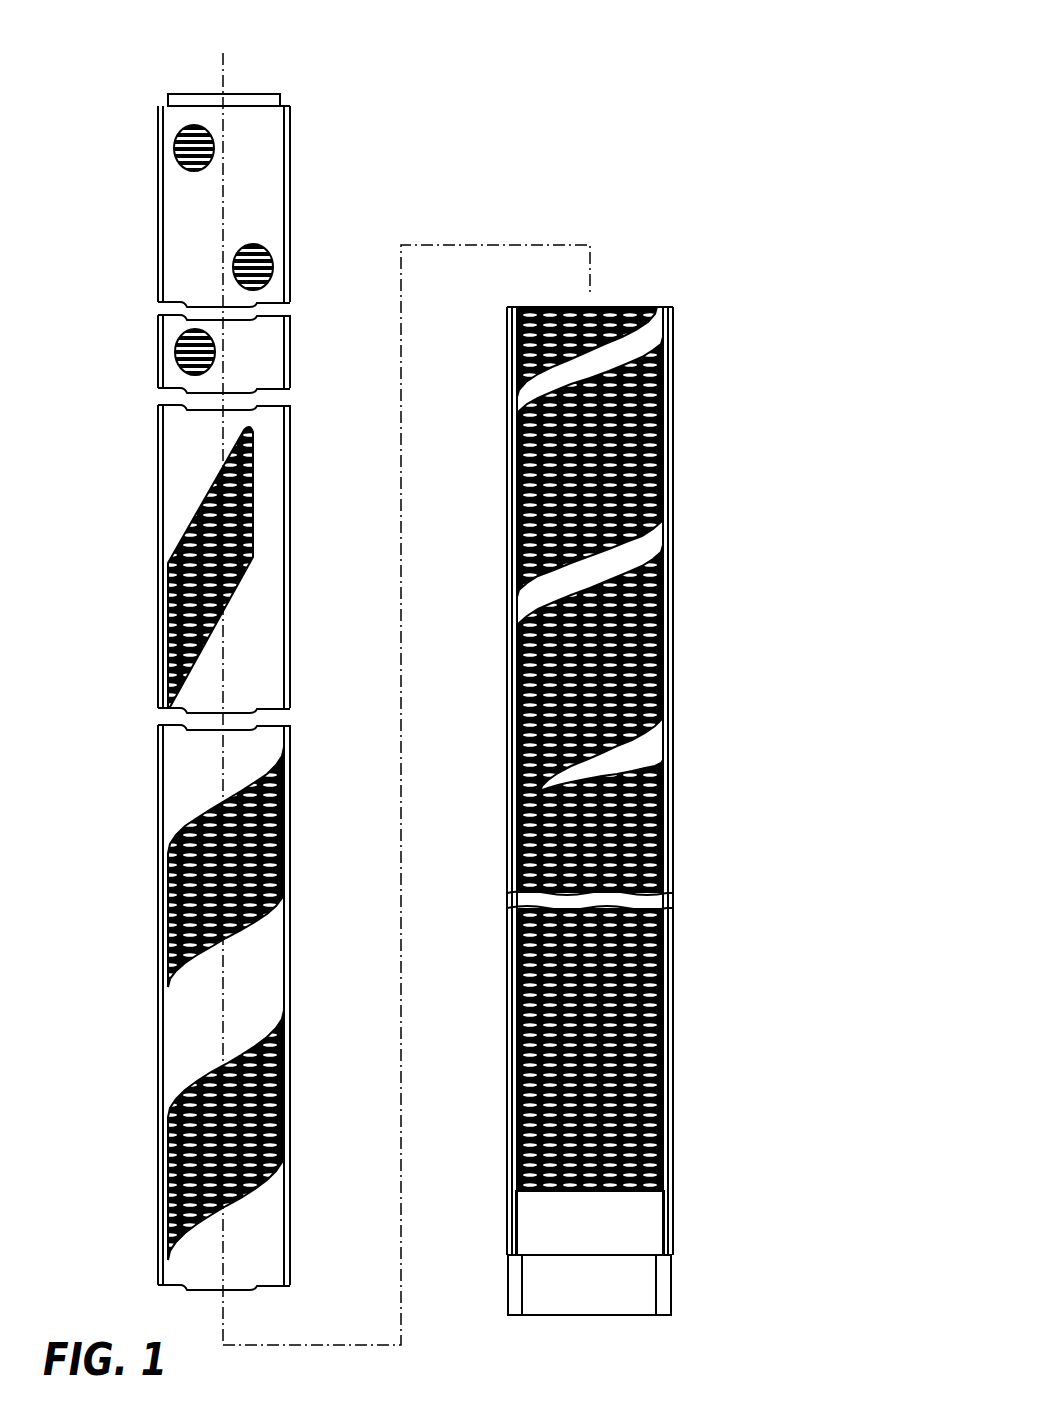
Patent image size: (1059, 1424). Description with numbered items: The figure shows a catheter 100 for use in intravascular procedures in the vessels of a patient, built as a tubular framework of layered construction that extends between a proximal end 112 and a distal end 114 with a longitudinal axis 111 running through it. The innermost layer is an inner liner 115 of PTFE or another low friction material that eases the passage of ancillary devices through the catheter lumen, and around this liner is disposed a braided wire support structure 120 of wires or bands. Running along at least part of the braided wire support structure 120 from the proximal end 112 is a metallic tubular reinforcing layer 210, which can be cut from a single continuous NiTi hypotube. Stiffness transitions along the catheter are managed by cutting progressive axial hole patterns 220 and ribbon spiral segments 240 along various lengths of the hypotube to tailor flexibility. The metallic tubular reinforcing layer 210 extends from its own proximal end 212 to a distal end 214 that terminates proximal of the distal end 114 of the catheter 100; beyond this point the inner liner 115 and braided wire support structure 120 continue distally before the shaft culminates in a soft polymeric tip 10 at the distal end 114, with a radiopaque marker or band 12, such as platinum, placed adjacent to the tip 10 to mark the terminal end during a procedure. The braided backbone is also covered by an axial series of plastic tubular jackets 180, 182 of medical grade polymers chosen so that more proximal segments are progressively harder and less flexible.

The catheter 100 is at (131, 58).
The longitudinal axis 111 is at (226, 78).
The proximal end 112 is at (170, 98).
The inner liner 115 is at (188, 105).
The proximal end 212 is at (286, 108).
The metallic tubular reinforcing layer 210 is at (265, 205).
The axial hole patterns 220 is at (235, 260).
The braided wire support structure 120 is at (200, 581).
The ribbon spiral segments 240 is at (253, 668).
The plastic tubular jacket 180 is at (168, 910).
The plastic tubular jacket 182 is at (667, 362).
The distal end 214 is at (580, 786).
The radiopaque marker or band 12 is at (644, 1220).
The soft polymeric tip 10 is at (647, 1282).
The distal end 114 is at (673, 1315).